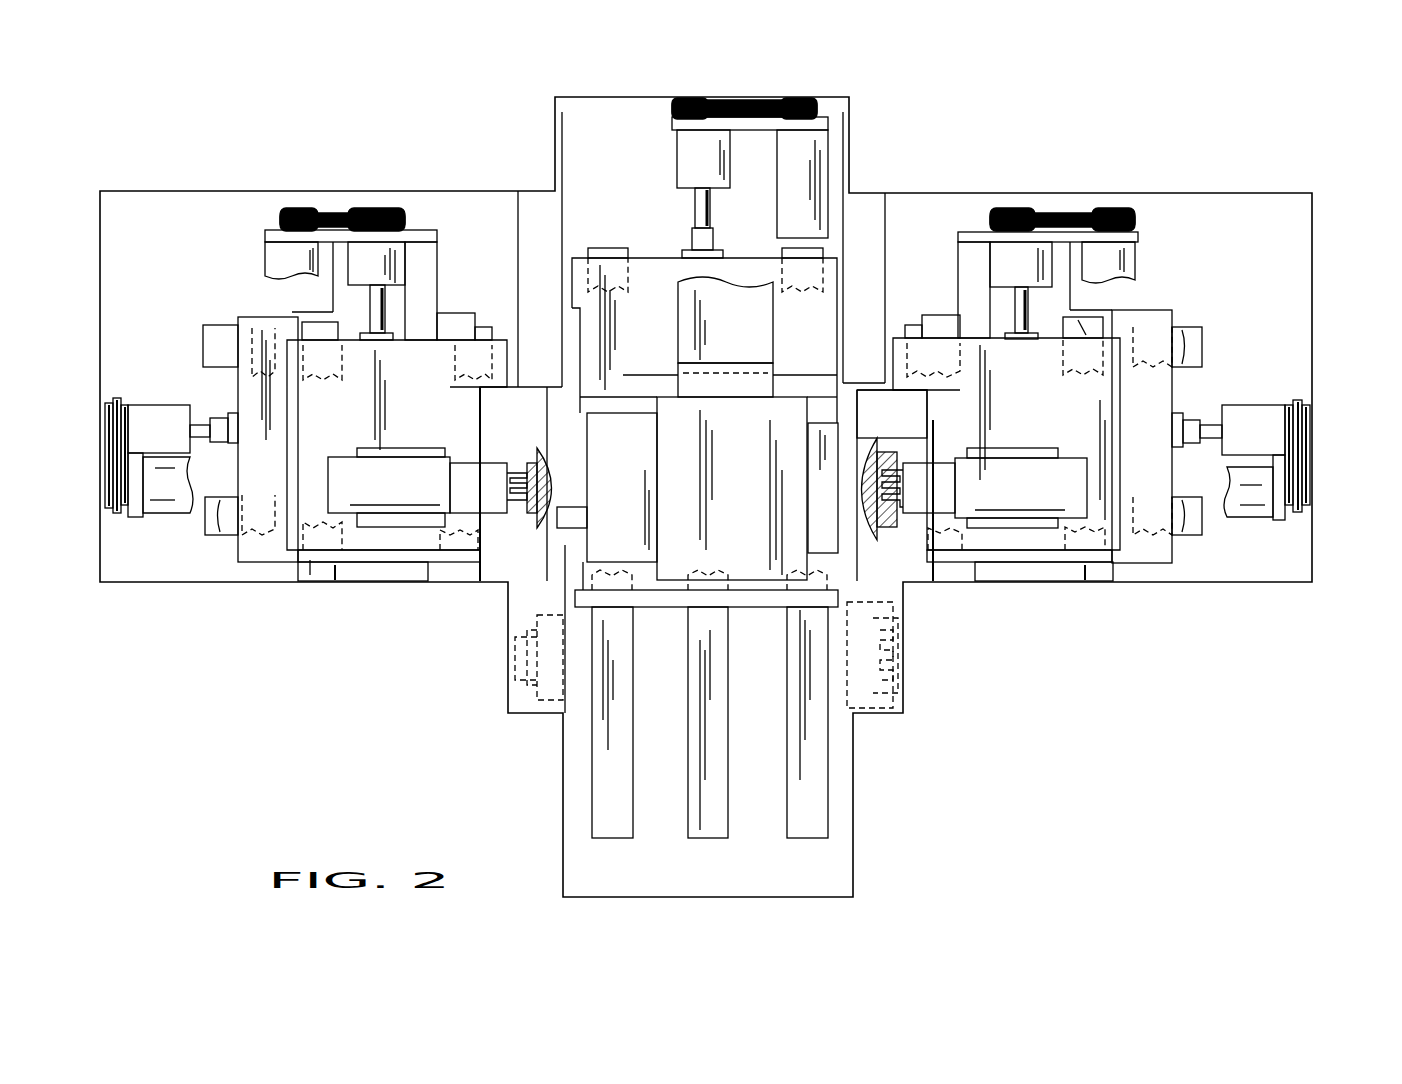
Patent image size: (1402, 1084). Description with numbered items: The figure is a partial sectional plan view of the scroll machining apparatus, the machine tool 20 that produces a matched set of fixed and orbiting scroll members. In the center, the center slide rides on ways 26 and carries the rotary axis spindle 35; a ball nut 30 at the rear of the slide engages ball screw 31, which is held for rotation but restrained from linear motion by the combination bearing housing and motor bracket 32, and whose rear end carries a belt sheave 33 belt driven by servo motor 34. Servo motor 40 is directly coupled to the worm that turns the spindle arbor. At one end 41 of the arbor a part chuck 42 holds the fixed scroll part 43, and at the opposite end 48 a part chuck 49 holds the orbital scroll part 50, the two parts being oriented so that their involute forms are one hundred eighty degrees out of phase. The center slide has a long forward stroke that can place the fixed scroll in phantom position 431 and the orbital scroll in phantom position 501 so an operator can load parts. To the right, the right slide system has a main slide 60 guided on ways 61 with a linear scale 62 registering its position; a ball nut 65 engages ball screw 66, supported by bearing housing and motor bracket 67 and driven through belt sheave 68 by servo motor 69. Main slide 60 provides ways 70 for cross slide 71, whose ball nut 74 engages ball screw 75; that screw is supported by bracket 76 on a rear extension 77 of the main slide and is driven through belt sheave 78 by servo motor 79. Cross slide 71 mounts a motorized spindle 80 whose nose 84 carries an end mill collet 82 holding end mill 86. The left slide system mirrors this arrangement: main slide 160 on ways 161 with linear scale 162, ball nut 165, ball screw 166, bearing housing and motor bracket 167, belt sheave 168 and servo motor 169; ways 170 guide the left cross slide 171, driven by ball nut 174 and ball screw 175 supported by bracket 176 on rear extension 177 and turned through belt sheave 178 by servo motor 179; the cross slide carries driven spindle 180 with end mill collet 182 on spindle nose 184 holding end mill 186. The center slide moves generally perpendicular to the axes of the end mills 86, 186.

The machine tool 20 is at (1114, 142).
The ways 26 is at (612, 830).
The ball nut 30 is at (692, 250).
The ball screw 31 is at (695, 209).
The combination bearing housing and motor bracket 32 is at (690, 160).
The belt sheave 33 is at (715, 102).
The servo motor 34 is at (808, 175).
The rotary axis spindle 35 is at (684, 561).
The servo motor 40 is at (756, 338).
The end of spindle arbor 41 is at (840, 504).
The part chuck 42 is at (882, 537).
The fixed scroll part 43 is at (905, 468).
The end of spindle arbor 48 is at (640, 502).
The part chuck 49 is at (575, 512).
The orbital scroll part 50 is at (548, 473).
The main slide 60 is at (1162, 311).
The ways 61 is at (1194, 340).
The linear scale 62 is at (1092, 572).
The ball nut 65 is at (1184, 415).
The ball screw 66 is at (1210, 421).
The combination bearing housing and motor bracket 67 is at (1265, 408).
The belt sheave 68 is at (1310, 441).
The servo motor 69 is at (1253, 507).
The ways 70 is at (947, 322).
The cross slide 71 is at (1099, 414).
The ball nut 74 is at (1021, 340).
The ball screw 75 is at (1016, 305).
The combination bearing housing and motor bracket 76 is at (1000, 256).
The rear extension 77 is at (971, 253).
The belt sheave 78 is at (1020, 210).
The servo motor 79 is at (1131, 258).
The motorized or driven spindle 80 is at (1035, 478).
The end mill collet 82 is at (938, 467).
The spindle nose 84 is at (946, 495).
The end mill 86 is at (902, 481).
The main slide 160 is at (238, 317).
The ways 161 is at (208, 346).
The linear scale 162 is at (346, 570).
The ball nut 165 is at (233, 429).
The ball screw 166 is at (200, 425).
The combination bearing housing and motor bracket 167 is at (160, 418).
The belt sheave 168 is at (107, 440).
The servo motor 169 is at (163, 505).
The ways 170 is at (312, 328).
The left cross slide 171 is at (298, 472).
The ball nut 174 is at (372, 340).
The ball screw 175 is at (386, 302).
The combination bearing housing and motor bracket 176 is at (390, 265).
The rear extension of left main slide 177 is at (425, 235).
The belt sheave 178 is at (387, 207).
The servo motor 179 is at (282, 258).
The motorized or driven spindle 180 is at (347, 471).
The end mill collet 182 is at (490, 503).
The spindle nose 184 is at (460, 480).
The end mill 186 is at (515, 470).
The phantom position of fixed scroll 431 is at (898, 688).
The phantom position of orbital scroll 501 is at (514, 667).